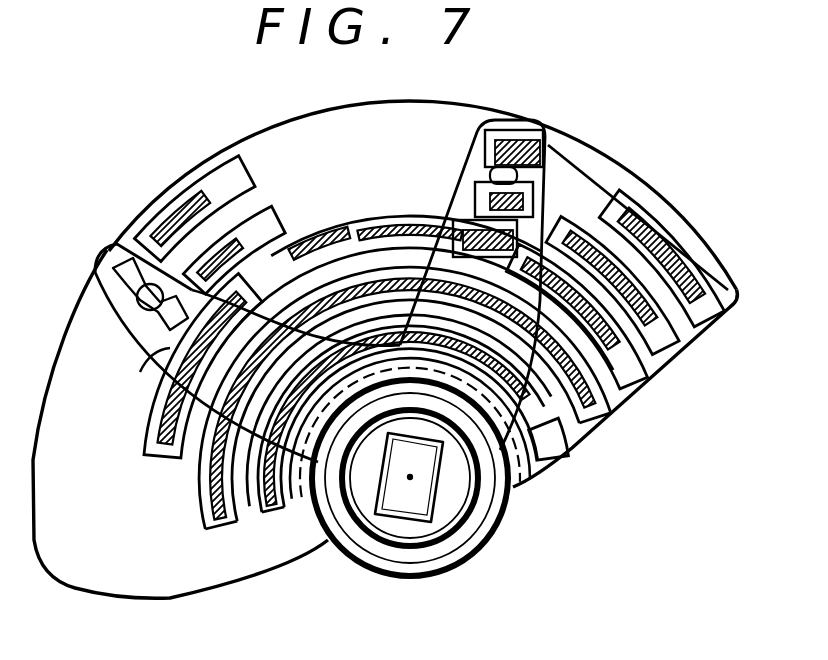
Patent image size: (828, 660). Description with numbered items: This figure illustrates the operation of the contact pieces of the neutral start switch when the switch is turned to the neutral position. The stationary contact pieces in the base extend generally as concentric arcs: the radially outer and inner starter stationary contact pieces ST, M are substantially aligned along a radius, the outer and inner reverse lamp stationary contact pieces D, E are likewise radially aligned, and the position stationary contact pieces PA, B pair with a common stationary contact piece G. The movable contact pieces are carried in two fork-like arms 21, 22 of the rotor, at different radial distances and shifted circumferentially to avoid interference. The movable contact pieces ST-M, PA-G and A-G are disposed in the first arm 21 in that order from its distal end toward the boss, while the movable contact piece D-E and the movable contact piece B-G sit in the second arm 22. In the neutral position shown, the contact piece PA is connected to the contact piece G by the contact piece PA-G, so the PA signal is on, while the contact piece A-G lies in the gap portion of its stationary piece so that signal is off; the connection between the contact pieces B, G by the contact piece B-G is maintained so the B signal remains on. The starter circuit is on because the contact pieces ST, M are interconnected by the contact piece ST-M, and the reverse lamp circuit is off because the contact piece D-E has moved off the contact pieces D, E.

The arm 21 is at (512, 120).
The arm 22 is at (104, 252).
The stationary contact piece D is at (250, 180).
The stationary contact piece E is at (262, 236).
The movable contact piece ST-M is at (472, 185).
The movable contact piece PA-G is at (448, 230).
The movable contact piece D-E is at (143, 308).
The movable contact piece B-G is at (147, 372).
The stationary contact piece B is at (163, 462).
The stationary contact piece G is at (226, 538).
The stationary contact piece ST is at (710, 318).
The stationary contact piece M is at (672, 347).
The stationary contact piece PA is at (640, 386).
The movable contact piece A-G is at (576, 450).